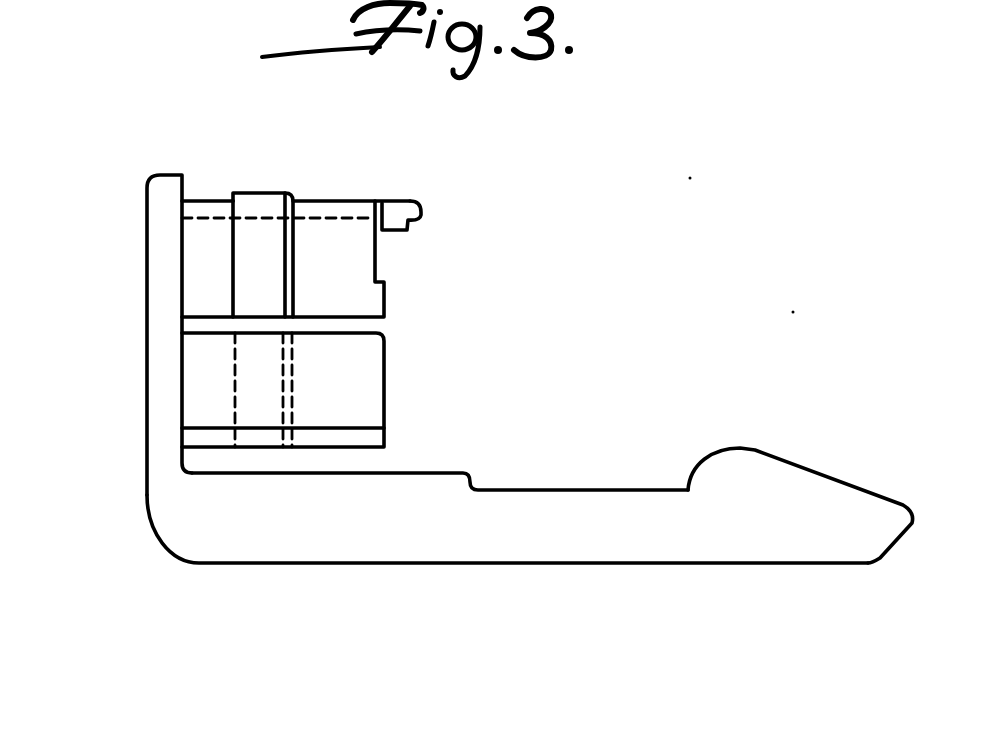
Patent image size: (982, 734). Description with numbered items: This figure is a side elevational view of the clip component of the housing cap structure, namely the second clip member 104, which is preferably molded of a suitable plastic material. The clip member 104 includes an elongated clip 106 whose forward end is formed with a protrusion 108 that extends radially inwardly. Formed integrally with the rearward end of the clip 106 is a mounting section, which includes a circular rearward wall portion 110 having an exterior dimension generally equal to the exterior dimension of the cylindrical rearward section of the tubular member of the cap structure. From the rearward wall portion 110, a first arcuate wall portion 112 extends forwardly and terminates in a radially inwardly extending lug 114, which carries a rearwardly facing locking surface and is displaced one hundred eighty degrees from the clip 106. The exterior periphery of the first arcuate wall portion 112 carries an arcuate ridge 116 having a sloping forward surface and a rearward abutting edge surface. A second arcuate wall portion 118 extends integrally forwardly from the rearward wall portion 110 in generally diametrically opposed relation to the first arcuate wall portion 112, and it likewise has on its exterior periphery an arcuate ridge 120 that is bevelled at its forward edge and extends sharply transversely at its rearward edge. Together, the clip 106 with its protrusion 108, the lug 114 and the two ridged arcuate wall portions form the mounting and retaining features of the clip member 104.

The clip member 104 is at (481, 408).
The clip 106 is at (580, 542).
The protrusion 108 is at (740, 448).
The rearward wall portion 110 is at (165, 362).
The first arcuate wall portion 112 is at (360, 232).
The lug 114 is at (408, 221).
The arcuate ridge 116 is at (253, 238).
The second arcuate wall portion 118 is at (334, 435).
The arcuate ridge 120 is at (263, 413).